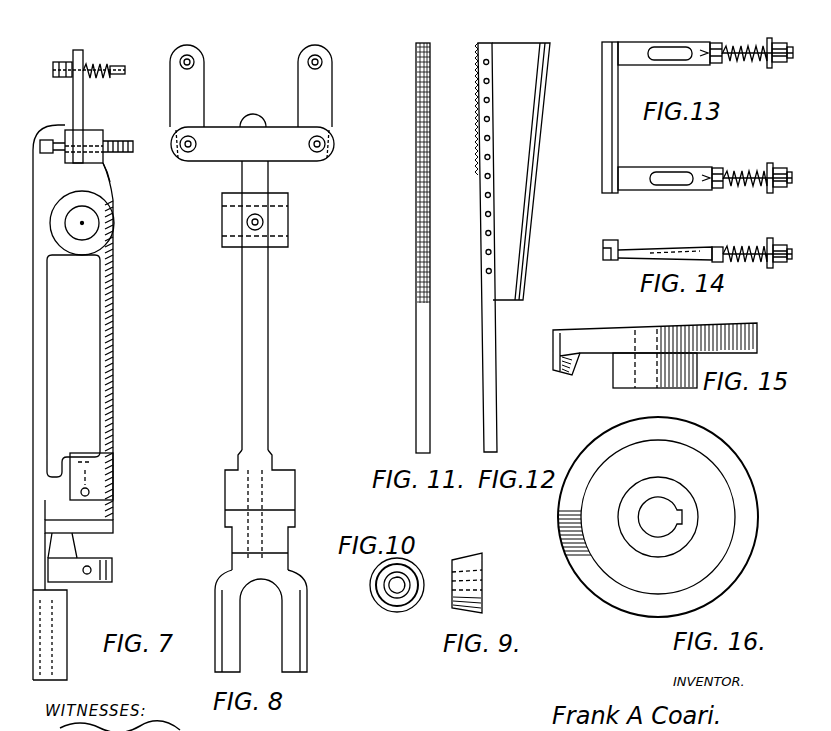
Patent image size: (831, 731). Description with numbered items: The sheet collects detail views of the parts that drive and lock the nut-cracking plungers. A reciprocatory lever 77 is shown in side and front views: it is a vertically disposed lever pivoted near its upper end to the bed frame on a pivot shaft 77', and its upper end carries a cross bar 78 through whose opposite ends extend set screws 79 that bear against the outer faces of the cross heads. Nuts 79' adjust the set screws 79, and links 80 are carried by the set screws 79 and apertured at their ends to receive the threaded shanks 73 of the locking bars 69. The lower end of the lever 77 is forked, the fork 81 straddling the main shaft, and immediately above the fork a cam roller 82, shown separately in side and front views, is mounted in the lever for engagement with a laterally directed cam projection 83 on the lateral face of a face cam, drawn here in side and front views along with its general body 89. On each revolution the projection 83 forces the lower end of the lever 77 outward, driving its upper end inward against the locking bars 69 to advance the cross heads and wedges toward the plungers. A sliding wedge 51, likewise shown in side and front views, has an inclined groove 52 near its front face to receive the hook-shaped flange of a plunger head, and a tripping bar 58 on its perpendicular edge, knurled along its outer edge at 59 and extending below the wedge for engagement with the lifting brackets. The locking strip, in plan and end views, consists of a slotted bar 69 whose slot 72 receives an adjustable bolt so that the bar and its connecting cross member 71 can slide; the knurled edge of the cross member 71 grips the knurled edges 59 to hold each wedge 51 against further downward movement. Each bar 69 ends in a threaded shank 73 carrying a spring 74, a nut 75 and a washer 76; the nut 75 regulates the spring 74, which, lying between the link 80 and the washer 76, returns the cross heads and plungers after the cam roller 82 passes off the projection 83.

In FIG. 12, the sliding wedge 51 is at (517, 145).
In FIG. 12, the inclined groove 52 is at (525, 182).
In FIG. 11, the tripping bar 58 is at (420, 322).
In FIG. 12, the tripping bar 58 is at (489, 365).
In FIG. 11, the knurled edge 59 is at (416, 262).
In FIG. 12, the knurled edge 59 is at (478, 268).
In FIG. 13, the locking bar 69 is at (651, 167).
In FIG. 14, the locking bar 69 is at (655, 245).
In FIG. 13, the cross member 71 is at (602, 85).
In FIG. 14, the cross member 71 is at (603, 249).
In FIG. 13, the slot 72 is at (650, 187).
In FIG. 14, the slot 72 is at (686, 245).
In FIG. 7, the threaded shank 73 is at (125, 68).
In FIG. 13, the threaded shank 73 is at (752, 186).
In FIG. 14, the threaded shank 73 is at (733, 250).
In FIG. 7, the spring 74 is at (98, 62).
In FIG. 13, the spring 74 is at (750, 171).
In FIG. 14, the spring 74 is at (752, 240).
In FIG. 7, the nut 75 is at (53, 72).
In FIG. 13, the nut 75 is at (781, 188).
In FIG. 14, the nut 75 is at (779, 263).
In FIG. 13, the washer 76 is at (771, 163).
In FIG. 14, the washer 76 is at (771, 243).
In FIG. 7, the reciprocatory lever 77 is at (94, 402).
In FIG. 8, the reciprocatory lever 77 is at (245, 365).
In FIG. 7, the pivot shaft 77' is at (105, 225).
In FIG. 7, the cross bar 78 is at (112, 180).
In FIG. 8, the cross bar 78 is at (283, 152).
In FIG. 7, the set screw 79 is at (106, 137).
In FIG. 7, the nut 79' is at (38, 125).
In FIG. 7, the link 80 is at (83, 95).
In FIG. 8, the link 80 is at (272, 72).
In FIG. 7, the fork 81 is at (45, 608).
In FIG. 8, the fork 81 is at (282, 633).
In FIG. 10, the cam roller 82 is at (397, 597).
In FIG. 9, the cam roller 82 is at (477, 563).
In FIG. 16, the cam projection 83 is at (562, 525).
In FIG. 16, the disk 89 is at (732, 460).